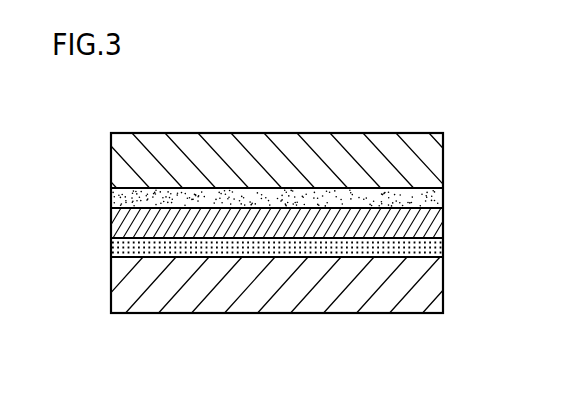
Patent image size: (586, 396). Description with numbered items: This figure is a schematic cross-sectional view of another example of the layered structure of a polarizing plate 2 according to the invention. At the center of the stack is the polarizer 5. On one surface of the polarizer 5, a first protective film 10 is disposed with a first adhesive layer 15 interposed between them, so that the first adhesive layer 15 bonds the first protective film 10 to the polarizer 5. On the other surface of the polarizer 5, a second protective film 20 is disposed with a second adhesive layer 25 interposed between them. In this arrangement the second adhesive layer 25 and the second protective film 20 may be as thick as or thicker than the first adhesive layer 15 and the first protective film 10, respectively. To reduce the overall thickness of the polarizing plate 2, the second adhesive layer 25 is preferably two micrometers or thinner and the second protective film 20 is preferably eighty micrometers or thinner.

The polarizing plate 2 is at (457, 106).
The first protective film 10 is at (430, 163).
The first adhesive layer 15 is at (433, 198).
The polarizer 5 is at (433, 224).
The second adhesive layer 25 is at (432, 245).
The second protective film 20 is at (427, 286).